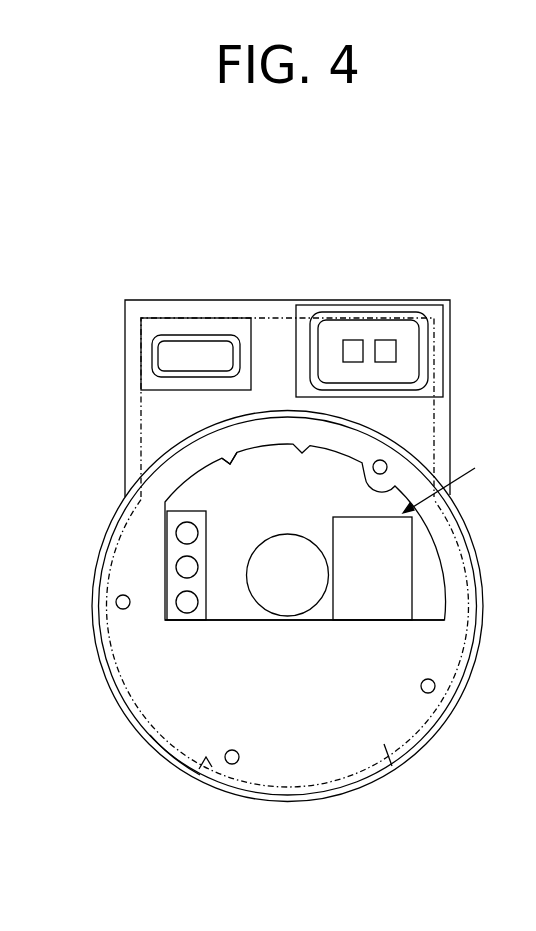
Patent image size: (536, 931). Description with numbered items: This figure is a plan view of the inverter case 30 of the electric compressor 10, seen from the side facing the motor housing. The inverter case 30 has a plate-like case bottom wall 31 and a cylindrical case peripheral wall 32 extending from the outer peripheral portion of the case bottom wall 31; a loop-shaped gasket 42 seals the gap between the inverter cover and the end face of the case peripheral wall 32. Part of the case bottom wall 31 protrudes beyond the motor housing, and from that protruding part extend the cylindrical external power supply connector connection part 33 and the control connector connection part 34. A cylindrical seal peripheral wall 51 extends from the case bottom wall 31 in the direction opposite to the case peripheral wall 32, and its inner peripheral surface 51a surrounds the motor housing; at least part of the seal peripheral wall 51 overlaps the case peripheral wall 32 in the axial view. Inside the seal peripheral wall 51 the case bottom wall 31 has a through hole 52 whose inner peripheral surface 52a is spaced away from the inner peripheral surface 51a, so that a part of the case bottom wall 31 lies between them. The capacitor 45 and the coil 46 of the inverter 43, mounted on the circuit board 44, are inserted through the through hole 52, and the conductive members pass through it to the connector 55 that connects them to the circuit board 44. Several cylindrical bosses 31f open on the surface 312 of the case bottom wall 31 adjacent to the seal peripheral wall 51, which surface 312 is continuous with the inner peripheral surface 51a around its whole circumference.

The electric compressor 10 is at (121, 291).
The inverter case 30 is at (400, 303).
The external power supply connector connection part 33 is at (428, 316).
The control connector connection part 34 is at (152, 351).
The case peripheral wall 32 is at (106, 678).
The case bottom wall 31 is at (138, 700).
The bosses 31f is at (370, 477).
The gasket 42 is at (134, 679).
The inverter 43 is at (445, 484).
The circuit board 44 is at (226, 613).
The capacitor 45 is at (362, 613).
The coil 46 is at (291, 610).
The seal peripheral wall 51 is at (176, 750).
The inner peripheral surface of the seal peripheral wall 51a is at (205, 772).
The through hole 52 is at (310, 445).
The inner peripheral surface of the through hole 52a is at (228, 460).
The connector 55 is at (171, 556).
The surface of the case bottom wall adjacent to the seal peripheral wall 312 is at (389, 768).